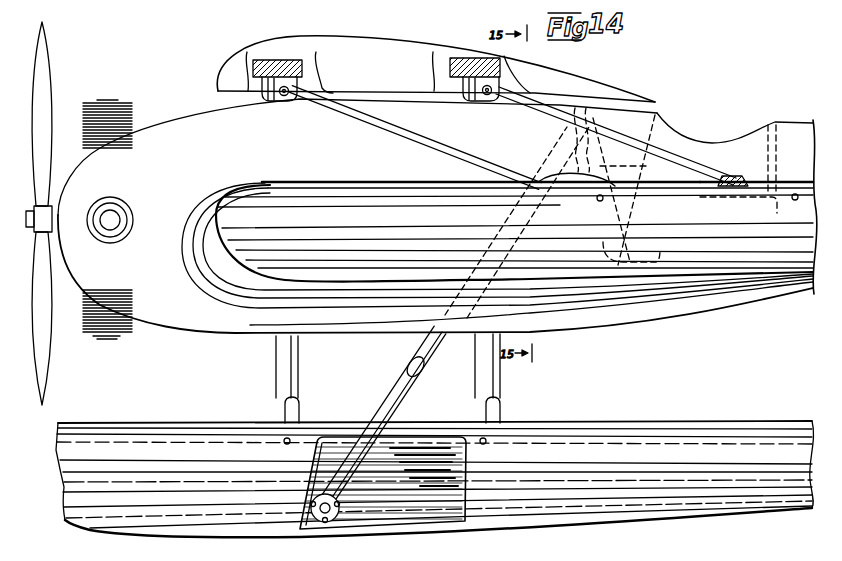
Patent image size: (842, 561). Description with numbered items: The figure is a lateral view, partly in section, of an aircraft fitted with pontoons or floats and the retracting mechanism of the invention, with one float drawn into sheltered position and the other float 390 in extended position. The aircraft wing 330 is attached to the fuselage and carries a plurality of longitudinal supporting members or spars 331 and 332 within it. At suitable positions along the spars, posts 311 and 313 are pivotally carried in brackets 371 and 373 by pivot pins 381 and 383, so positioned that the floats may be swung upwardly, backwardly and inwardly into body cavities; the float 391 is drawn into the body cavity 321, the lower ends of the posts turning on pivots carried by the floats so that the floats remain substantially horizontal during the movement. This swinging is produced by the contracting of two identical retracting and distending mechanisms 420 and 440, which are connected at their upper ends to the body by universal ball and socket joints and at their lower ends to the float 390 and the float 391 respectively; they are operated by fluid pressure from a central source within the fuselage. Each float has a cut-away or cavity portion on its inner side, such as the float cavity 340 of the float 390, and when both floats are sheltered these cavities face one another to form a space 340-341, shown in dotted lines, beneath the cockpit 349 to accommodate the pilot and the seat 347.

The aircraft wing 330 is at (373, 52).
The spar 332 is at (303, 66).
The spar 331 is at (449, 67).
The bracket 371 is at (300, 86).
The bracket 373 is at (463, 86).
The pivot pin 381 is at (279, 100).
The pivot pin 383 is at (470, 98).
The post 311 is at (353, 113).
The post 313 is at (513, 101).
The cockpit 349 is at (693, 140).
The float 391 is at (380, 211).
The body cavity 321 is at (288, 298).
The retracting and distending mechanism 420 is at (554, 147).
The retracting and distending mechanism 440 is at (627, 166).
The seat 347 is at (713, 202).
The space 340-341 is at (712, 240).
The float 390 is at (603, 443).
The float cavity 340 is at (408, 502).